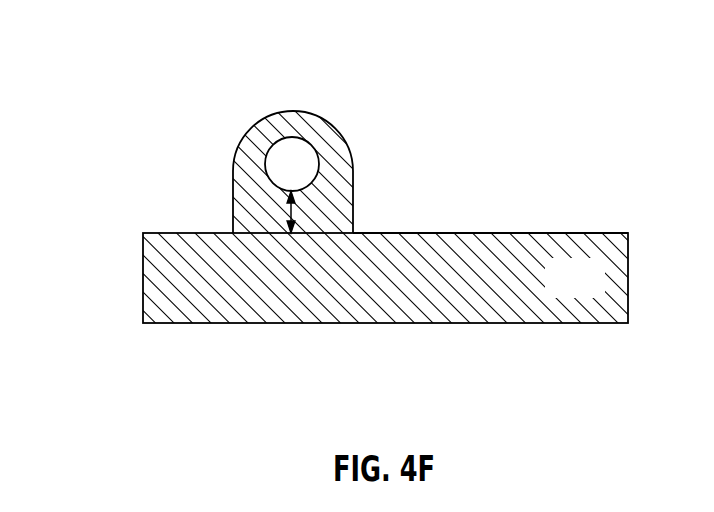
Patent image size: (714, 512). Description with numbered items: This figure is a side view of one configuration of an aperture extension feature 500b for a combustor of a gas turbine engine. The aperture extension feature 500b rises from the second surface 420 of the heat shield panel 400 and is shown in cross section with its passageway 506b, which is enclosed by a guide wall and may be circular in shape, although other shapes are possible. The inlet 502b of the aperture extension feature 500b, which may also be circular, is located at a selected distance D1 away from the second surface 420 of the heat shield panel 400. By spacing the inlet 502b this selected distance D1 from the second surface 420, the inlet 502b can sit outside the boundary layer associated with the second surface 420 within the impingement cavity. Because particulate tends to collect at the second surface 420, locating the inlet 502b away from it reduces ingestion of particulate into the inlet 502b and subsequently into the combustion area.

The aperture extension feature 500b is at (142, 58).
The heat shield panel 400 is at (597, 292).
The second surface 420 is at (503, 233).
The inlet 502b is at (314, 147).
The passageway 506b is at (289, 155).
The selected distance D1 is at (288, 211).